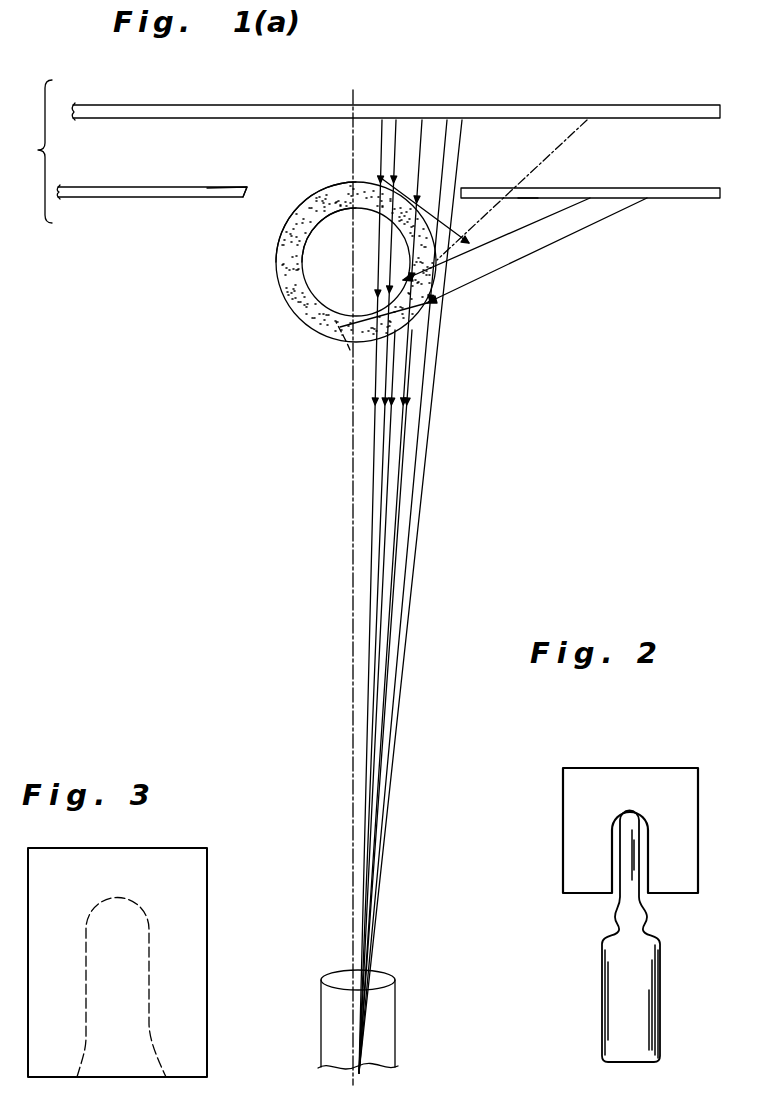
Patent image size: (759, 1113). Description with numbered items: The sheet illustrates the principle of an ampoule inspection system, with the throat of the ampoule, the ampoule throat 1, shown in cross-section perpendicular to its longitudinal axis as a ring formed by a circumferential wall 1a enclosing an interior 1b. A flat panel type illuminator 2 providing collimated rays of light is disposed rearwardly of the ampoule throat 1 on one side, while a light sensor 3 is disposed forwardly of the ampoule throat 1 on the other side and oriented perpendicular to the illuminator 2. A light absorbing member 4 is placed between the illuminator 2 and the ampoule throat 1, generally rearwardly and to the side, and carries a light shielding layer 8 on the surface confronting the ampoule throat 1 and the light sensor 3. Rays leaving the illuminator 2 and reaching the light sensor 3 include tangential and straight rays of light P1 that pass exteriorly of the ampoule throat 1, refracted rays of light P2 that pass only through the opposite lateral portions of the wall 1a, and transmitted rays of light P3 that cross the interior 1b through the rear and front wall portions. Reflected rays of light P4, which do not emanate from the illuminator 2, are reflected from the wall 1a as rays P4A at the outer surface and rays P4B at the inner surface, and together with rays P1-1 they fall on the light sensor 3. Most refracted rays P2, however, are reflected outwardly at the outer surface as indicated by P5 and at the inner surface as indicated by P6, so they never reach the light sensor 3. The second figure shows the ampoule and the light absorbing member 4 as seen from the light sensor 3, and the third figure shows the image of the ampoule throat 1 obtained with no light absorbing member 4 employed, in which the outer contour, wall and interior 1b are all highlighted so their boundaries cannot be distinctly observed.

In FIG. 1A, the ampoule throat 1 is at (284, 315).
In FIG. 2, the ampoule throat 1 is at (628, 873).
In FIG. 1A, the circumferential wall 1a is at (290, 287).
In FIG. 1A, the interior 1b is at (329, 283).
In FIG. 1A, the illuminator 2 is at (305, 107).
In FIG. 1A, the light sensor 3 is at (395, 985).
In FIG. 1A, the light absorbing member 4 is at (137, 197).
In FIG. 2, the light absorbing member 4 is at (582, 795).
In FIG. 1A, the light shielding layer 8 is at (207, 188).
In FIG. 1A, the tangential and straight rays of light P1 is at (460, 163).
In FIG. 1A, the transmitted light ray P1-1 is at (418, 450).
In FIG. 1A, the refracted rays of light P2 is at (410, 366).
In FIG. 1A, the transmitted rays of light P3 is at (370, 578).
In FIG. 1A, the reflected rays of light P4 is at (583, 233).
In FIG. 1A, the rays of light reflected at the outer surface P4A is at (405, 513).
In FIG. 1A, the rays of light reflected at the inner surface P4B is at (390, 663).
In FIG. 1A, the rays reflected at the outer surface P5 is at (490, 207).
In FIG. 1A, the rays reflected at the inner surface P6 is at (350, 350).